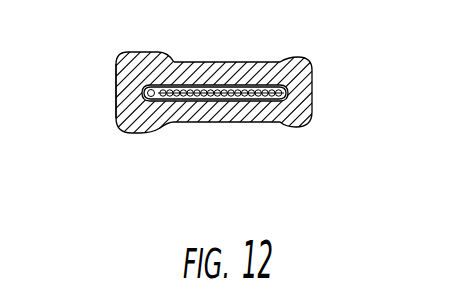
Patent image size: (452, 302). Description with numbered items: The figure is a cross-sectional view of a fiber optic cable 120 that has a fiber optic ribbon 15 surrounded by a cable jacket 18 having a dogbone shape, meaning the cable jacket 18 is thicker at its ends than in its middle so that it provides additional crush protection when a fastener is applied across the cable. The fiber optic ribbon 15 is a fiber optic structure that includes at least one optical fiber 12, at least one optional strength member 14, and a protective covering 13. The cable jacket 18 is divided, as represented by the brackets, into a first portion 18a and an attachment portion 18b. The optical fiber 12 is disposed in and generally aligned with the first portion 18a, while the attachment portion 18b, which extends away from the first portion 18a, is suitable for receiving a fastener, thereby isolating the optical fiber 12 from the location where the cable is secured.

The fiber optic cable 120 is at (100, 90).
The fiber optic ribbon 15 is at (405, 6).
The optical fiber 12 is at (222, 67).
The protective covering 13 is at (232, 82).
The strength member 14 is at (268, 88).
The cable jacket 18 is at (308, 115).
The first portion 18a is at (162, 145).
The attachment portion 18b is at (315, 145).